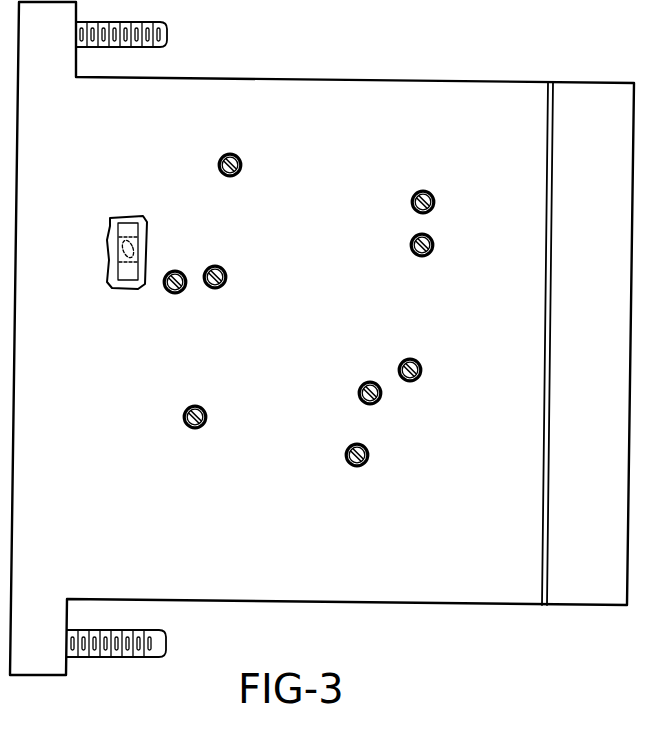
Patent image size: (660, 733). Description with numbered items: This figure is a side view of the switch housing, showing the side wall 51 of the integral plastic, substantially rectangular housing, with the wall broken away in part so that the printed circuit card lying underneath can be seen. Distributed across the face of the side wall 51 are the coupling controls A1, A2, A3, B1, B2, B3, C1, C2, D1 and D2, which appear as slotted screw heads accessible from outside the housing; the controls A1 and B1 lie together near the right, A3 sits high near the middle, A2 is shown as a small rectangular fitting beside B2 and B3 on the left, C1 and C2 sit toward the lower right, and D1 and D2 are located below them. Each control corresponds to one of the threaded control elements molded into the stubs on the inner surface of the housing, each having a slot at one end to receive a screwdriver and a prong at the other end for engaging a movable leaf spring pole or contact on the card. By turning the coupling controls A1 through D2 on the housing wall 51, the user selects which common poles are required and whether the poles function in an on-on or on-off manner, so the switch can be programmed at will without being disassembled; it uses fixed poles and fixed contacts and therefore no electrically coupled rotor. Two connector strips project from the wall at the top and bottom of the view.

The side wall 51 is at (263, 542).
The coupling control A1 is at (441, 203).
The coupling control A2 is at (144, 252).
The coupling control A3 is at (248, 166).
The coupling control B1 is at (440, 246).
The coupling control B2 is at (161, 295).
The coupling control B3 is at (232, 278).
The coupling control C1 is at (427, 371).
The coupling control C2 is at (354, 396).
The coupling control D1 is at (213, 419).
The coupling control D2 is at (376, 456).